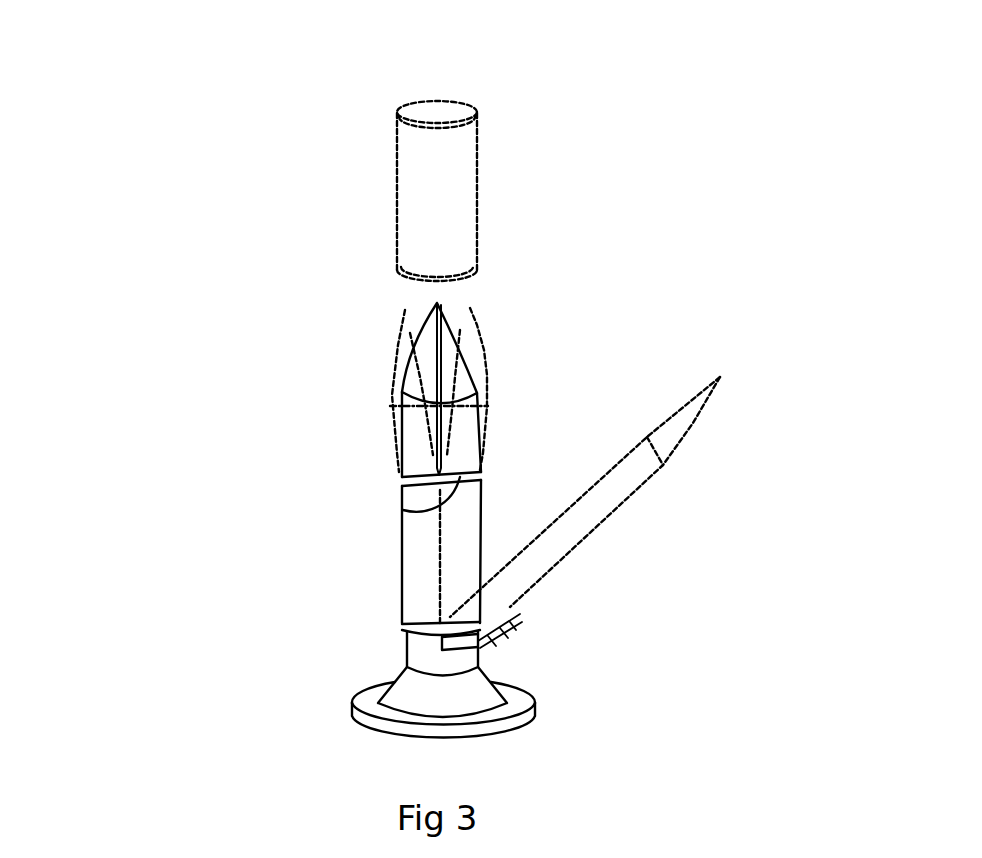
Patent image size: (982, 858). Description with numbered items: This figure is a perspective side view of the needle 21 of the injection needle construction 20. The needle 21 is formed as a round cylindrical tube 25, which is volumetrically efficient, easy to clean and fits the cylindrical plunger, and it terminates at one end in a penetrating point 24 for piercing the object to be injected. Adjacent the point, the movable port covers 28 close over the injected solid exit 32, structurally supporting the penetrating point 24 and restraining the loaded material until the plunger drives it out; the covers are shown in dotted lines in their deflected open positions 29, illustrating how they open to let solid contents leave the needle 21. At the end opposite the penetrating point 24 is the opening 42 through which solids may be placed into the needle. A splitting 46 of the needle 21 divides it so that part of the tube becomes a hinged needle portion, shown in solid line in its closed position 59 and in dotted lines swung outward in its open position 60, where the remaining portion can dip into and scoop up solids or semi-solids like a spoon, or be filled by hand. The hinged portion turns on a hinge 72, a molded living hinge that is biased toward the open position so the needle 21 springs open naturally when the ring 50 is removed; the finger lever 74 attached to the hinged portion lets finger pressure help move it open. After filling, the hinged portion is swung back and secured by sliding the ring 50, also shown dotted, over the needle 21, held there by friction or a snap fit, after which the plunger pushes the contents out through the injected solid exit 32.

The injection needle construction 20 is at (345, 606).
The needle 21 is at (478, 443).
The penetrating point 24 is at (437, 303).
The cylindrical tube 25 is at (478, 407).
The movable port cover 28 is at (448, 358).
The movable port covers in open position 29 is at (460, 387).
The injected solid exit 32 is at (473, 312).
The opening 42 is at (448, 743).
The splitting 46 is at (400, 477).
The ring 50 is at (440, 192).
The hinged needle portion in closed position 59 is at (403, 510).
The hinged needle portion in open position 60 is at (537, 560).
The hinge 72 is at (517, 643).
The finger lever 74 is at (517, 623).